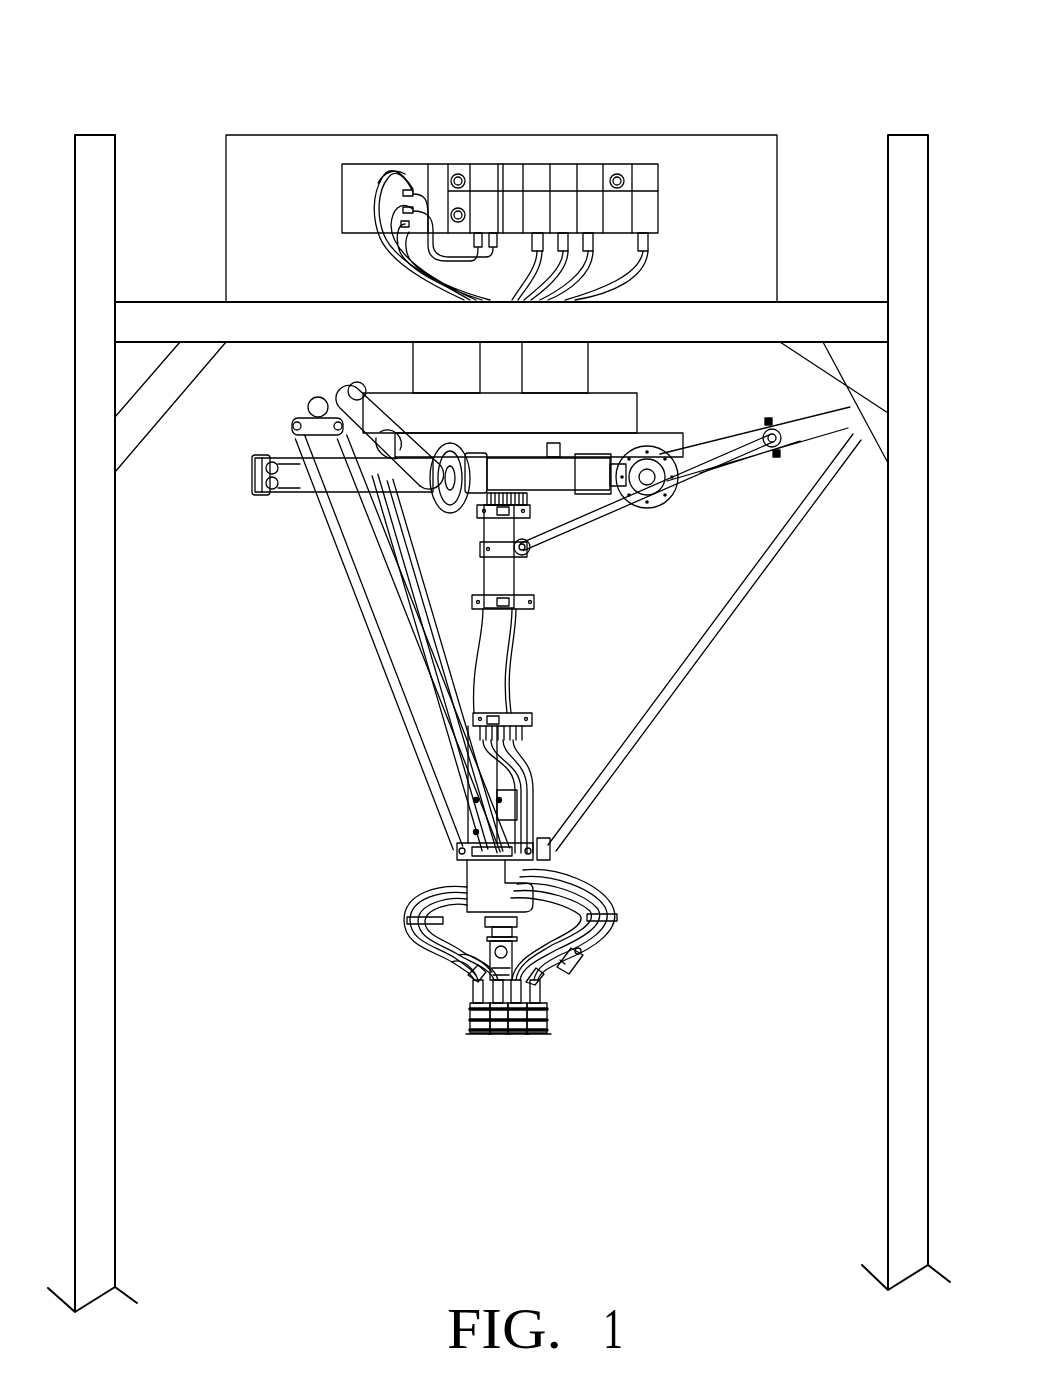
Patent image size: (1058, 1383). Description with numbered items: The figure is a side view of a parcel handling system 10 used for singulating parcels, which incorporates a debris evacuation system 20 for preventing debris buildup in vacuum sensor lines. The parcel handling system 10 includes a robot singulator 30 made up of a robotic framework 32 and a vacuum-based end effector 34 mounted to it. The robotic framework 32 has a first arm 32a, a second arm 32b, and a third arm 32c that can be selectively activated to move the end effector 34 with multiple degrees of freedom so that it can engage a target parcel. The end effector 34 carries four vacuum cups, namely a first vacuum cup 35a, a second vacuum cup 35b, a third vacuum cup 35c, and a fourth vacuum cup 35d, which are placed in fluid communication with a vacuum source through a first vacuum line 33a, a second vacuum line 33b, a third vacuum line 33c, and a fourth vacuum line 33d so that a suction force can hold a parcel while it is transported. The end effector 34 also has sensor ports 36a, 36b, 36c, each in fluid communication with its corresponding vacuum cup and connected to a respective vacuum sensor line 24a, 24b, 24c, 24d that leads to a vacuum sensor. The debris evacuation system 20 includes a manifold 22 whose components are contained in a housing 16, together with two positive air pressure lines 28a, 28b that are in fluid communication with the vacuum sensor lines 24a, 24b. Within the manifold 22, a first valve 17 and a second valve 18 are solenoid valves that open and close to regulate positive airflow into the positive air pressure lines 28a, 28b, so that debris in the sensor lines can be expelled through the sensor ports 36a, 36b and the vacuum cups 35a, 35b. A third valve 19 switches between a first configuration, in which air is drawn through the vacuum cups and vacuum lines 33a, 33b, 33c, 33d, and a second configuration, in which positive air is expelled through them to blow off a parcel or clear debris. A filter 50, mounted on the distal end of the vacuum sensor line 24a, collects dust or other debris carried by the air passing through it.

The parcel handling system 10 is at (232, 94).
The housing 16 is at (352, 190).
The first valve 17 is at (459, 175).
The second valve 18 is at (465, 213).
The third valve 19 is at (620, 178).
The debris evacuation system 20 is at (587, 126).
The manifold 22 is at (363, 164).
The first positive air pressure line 28a is at (408, 189).
The second positive air pressure line 28b is at (410, 206).
The robot singulator 30 is at (726, 441).
The robotic framework 32 is at (321, 399).
The first arm 32a is at (378, 557).
The second arm 32b is at (402, 618).
The third arm 32c is at (722, 628).
The first vacuum sensor line 24a is at (552, 888).
The second vacuum sensor line 24b is at (590, 888).
The third vacuum sensor line 24c is at (422, 945).
The fourth vacuum sensor line 24d is at (446, 889).
The first vacuum line 33a is at (598, 901).
The second vacuum line 33b is at (585, 929).
The third vacuum line 33c is at (456, 962).
The fourth vacuum line 33d is at (412, 925).
The end effector 34 is at (501, 976).
The first vacuum cup 35a is at (542, 1034).
The second vacuum cup 35b is at (522, 1035).
The third vacuum cup 35c is at (480, 1035).
The fourth vacuum cup 35d is at (498, 1035).
The sensor port 36a is at (546, 990).
The sensor port 36b is at (534, 1013).
The sensor port 36c is at (476, 991).
The filter 50 is at (580, 962).